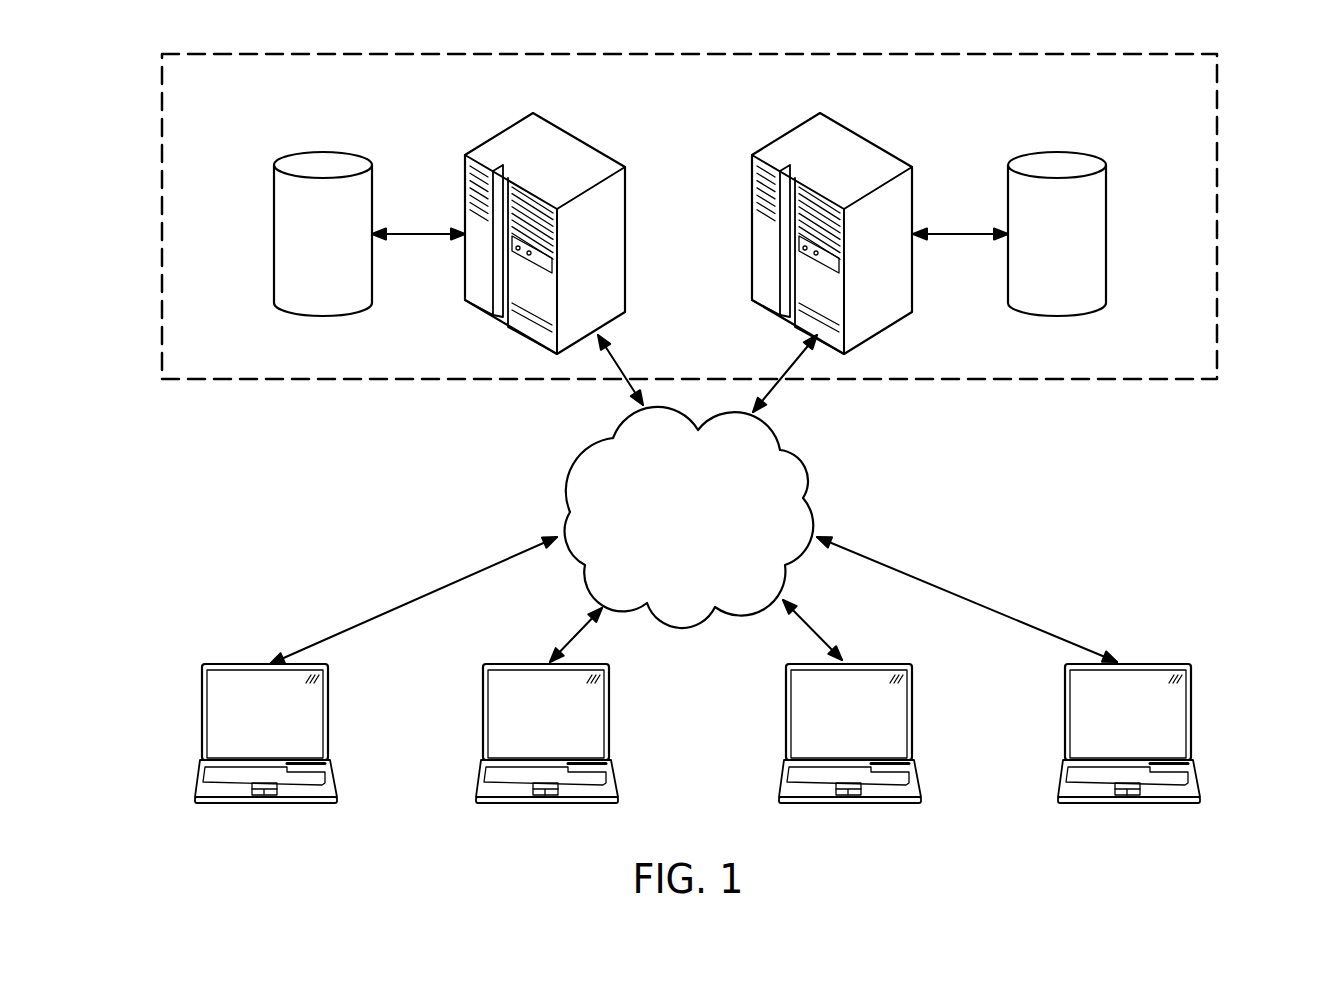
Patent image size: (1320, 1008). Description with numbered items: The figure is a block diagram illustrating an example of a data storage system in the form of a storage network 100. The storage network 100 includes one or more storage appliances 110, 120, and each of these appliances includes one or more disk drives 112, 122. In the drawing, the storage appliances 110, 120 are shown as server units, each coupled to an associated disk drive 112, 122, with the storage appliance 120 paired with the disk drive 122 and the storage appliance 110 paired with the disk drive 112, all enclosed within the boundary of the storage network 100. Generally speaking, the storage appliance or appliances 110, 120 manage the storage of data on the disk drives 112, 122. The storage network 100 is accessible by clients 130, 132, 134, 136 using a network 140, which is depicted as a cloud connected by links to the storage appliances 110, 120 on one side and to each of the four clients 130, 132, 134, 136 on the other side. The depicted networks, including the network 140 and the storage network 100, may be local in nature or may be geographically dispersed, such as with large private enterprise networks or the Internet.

The storage network 100 is at (670, 118).
The storage appliance 110 is at (878, 145).
The disk drive 112 is at (1106, 237).
The storage appliance 120 is at (495, 133).
The disk drive 122 is at (274, 237).
The client 130 is at (202, 709).
The client 132 is at (483, 709).
The client 134 is at (914, 708).
The client 136 is at (1192, 709).
The network 140 is at (671, 542).